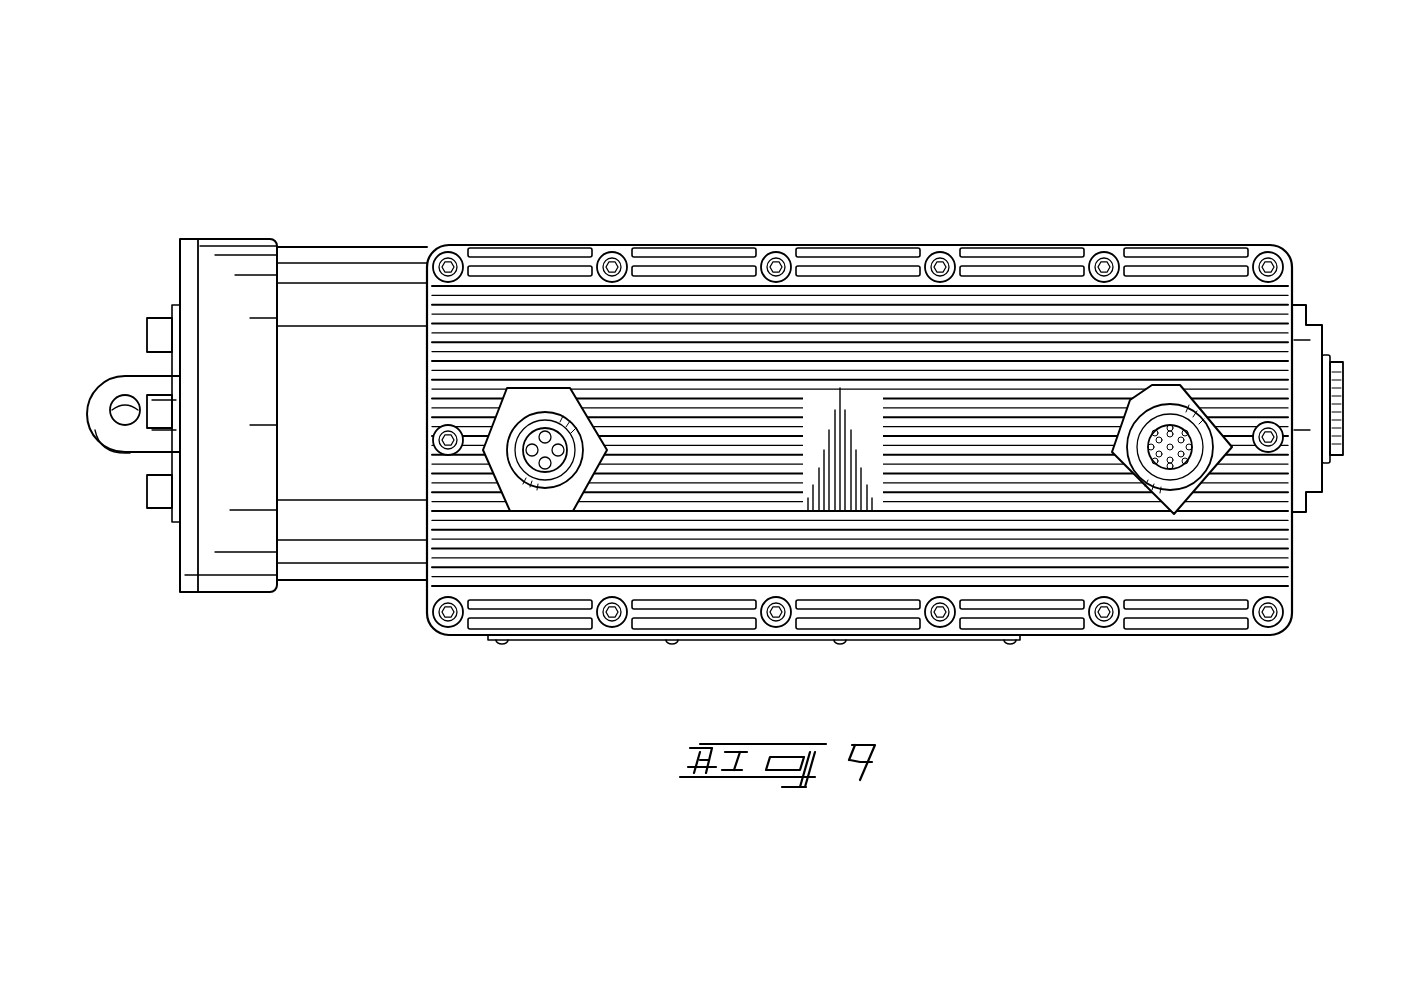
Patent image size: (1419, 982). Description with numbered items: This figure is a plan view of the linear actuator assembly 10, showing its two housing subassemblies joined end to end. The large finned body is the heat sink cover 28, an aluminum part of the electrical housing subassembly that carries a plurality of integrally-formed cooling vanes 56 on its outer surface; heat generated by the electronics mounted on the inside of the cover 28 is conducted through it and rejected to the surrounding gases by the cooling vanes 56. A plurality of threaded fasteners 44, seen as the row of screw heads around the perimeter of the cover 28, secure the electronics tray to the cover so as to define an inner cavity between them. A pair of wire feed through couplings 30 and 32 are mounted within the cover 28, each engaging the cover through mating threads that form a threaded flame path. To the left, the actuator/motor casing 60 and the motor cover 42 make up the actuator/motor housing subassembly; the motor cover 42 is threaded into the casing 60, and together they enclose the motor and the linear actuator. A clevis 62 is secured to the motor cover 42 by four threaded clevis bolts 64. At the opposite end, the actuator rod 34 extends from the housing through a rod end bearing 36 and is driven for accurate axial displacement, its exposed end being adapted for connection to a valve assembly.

The linear actuator assembly 10 is at (1008, 96).
The heat sink cover 28 is at (872, 240).
The wire feed through coupling 30 is at (540, 412).
The wire feed through coupling 32 is at (1167, 390).
The actuator rod 34 is at (1343, 417).
The rod end bearing 36 is at (1328, 356).
The motor cover 42 is at (193, 240).
The threaded fasteners 44 is at (612, 262).
The cooling vanes 56 is at (710, 252).
The actuator/motor casing 60 is at (372, 441).
The clevis 62 is at (108, 452).
The clevis bolts 64 is at (158, 510).